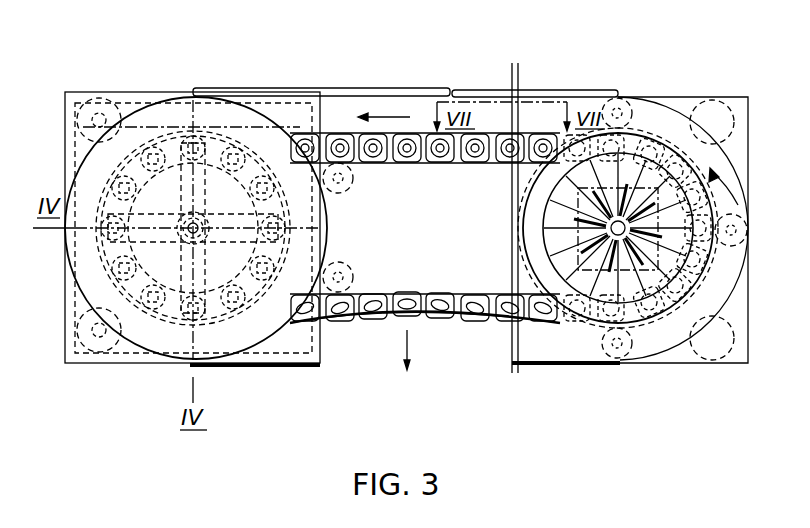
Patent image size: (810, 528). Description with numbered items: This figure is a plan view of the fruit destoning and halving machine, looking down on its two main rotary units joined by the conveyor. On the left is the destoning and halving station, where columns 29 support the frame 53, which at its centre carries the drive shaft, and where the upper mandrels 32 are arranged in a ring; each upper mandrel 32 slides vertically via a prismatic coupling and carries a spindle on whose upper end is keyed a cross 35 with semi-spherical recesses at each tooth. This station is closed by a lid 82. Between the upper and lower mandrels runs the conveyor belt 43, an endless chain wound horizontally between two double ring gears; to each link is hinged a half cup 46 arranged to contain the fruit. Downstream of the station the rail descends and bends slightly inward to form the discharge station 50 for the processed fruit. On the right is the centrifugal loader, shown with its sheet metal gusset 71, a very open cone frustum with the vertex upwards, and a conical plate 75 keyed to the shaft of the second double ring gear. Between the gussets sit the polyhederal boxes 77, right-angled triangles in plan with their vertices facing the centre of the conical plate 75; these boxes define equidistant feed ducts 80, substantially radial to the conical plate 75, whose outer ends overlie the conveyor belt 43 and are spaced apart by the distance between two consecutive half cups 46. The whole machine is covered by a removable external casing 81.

The columns 29 is at (213, 100).
The upper mandrels 32 is at (132, 284).
The cross 35 is at (233, 123).
The conveyor belt 43 is at (500, 278).
The half cup 46 is at (440, 164).
The discharge station 50 is at (425, 320).
The frame 53 is at (190, 126).
The sheet metal gusset 71 is at (528, 278).
The conical plate 75 is at (646, 282).
The polyhederal boxes 77 is at (666, 256).
The feed ducts 80 is at (642, 172).
The removable external casing 81 is at (537, 110).
The lid 82 is at (281, 92).